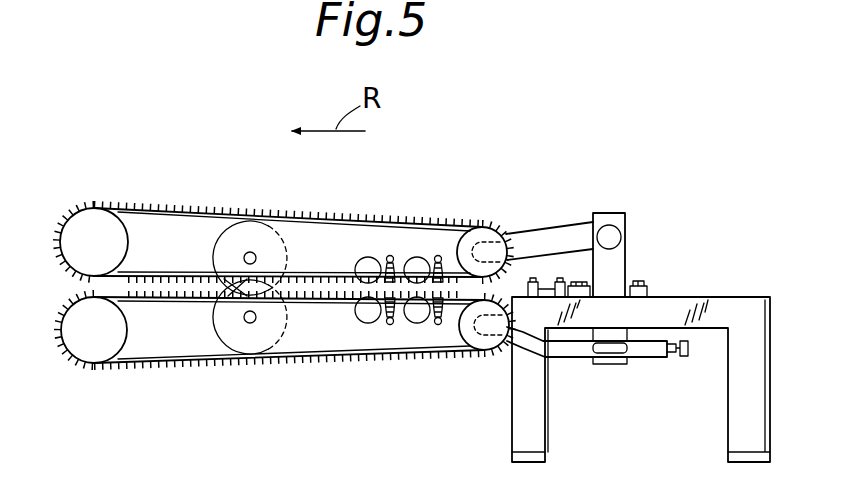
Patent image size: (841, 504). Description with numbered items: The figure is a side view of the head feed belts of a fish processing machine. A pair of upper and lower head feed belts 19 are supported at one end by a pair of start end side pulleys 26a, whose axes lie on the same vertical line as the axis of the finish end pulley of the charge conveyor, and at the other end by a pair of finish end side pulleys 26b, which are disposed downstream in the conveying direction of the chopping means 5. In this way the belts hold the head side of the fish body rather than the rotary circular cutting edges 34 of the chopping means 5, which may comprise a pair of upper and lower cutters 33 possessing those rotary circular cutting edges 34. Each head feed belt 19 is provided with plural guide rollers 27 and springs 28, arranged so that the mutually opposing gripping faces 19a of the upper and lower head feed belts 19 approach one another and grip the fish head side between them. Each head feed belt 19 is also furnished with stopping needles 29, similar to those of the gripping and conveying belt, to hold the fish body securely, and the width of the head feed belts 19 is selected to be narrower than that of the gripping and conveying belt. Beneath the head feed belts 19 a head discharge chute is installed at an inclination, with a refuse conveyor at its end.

The chopping means 5 is at (186, 153).
The stopping needles 29 is at (186, 208).
The upper and lower cutters 33 is at (268, 376).
The start end side pulleys 26a is at (496, 312).
The finish end side pulleys 26b is at (82, 344).
The rotary circular cutting edges 34 is at (229, 304).
The guide rollers 27 is at (410, 258).
The springs 28 is at (437, 256).
The head feed belts 19 is at (217, 274).
The gripping faces 19a is at (318, 280).